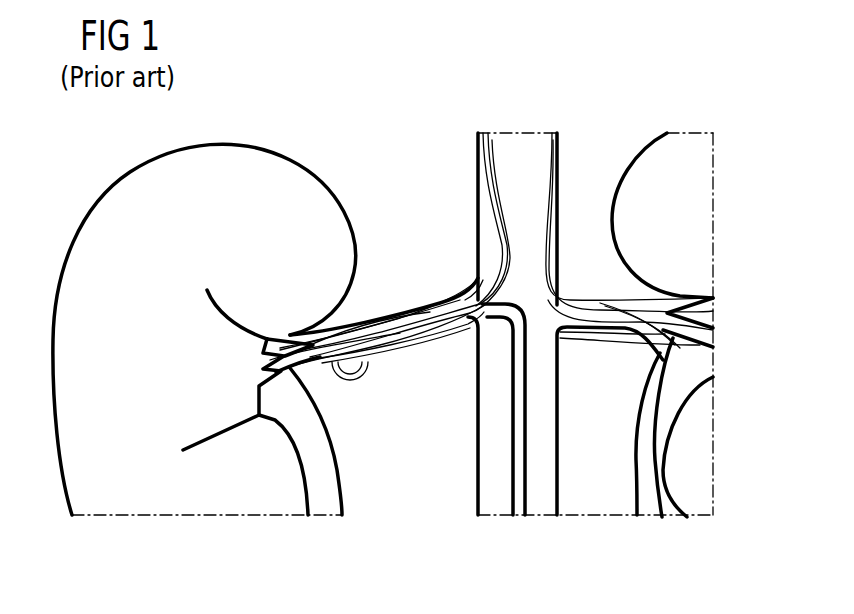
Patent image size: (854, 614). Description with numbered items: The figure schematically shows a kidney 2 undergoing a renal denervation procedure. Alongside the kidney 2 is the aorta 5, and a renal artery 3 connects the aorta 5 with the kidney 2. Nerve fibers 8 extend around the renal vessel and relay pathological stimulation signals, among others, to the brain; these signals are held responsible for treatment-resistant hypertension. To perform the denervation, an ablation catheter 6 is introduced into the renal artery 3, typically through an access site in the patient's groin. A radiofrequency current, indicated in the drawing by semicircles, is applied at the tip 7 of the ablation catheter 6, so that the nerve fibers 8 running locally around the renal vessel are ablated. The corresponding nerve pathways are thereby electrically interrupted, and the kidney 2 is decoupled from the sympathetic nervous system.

The kidney 2 is at (72, 295).
The renal artery 3 is at (393, 332).
The aorta 5 is at (535, 143).
The ablation catheter 6 is at (517, 505).
The tip 7 is at (363, 362).
The nerve fibers 8 is at (488, 153).